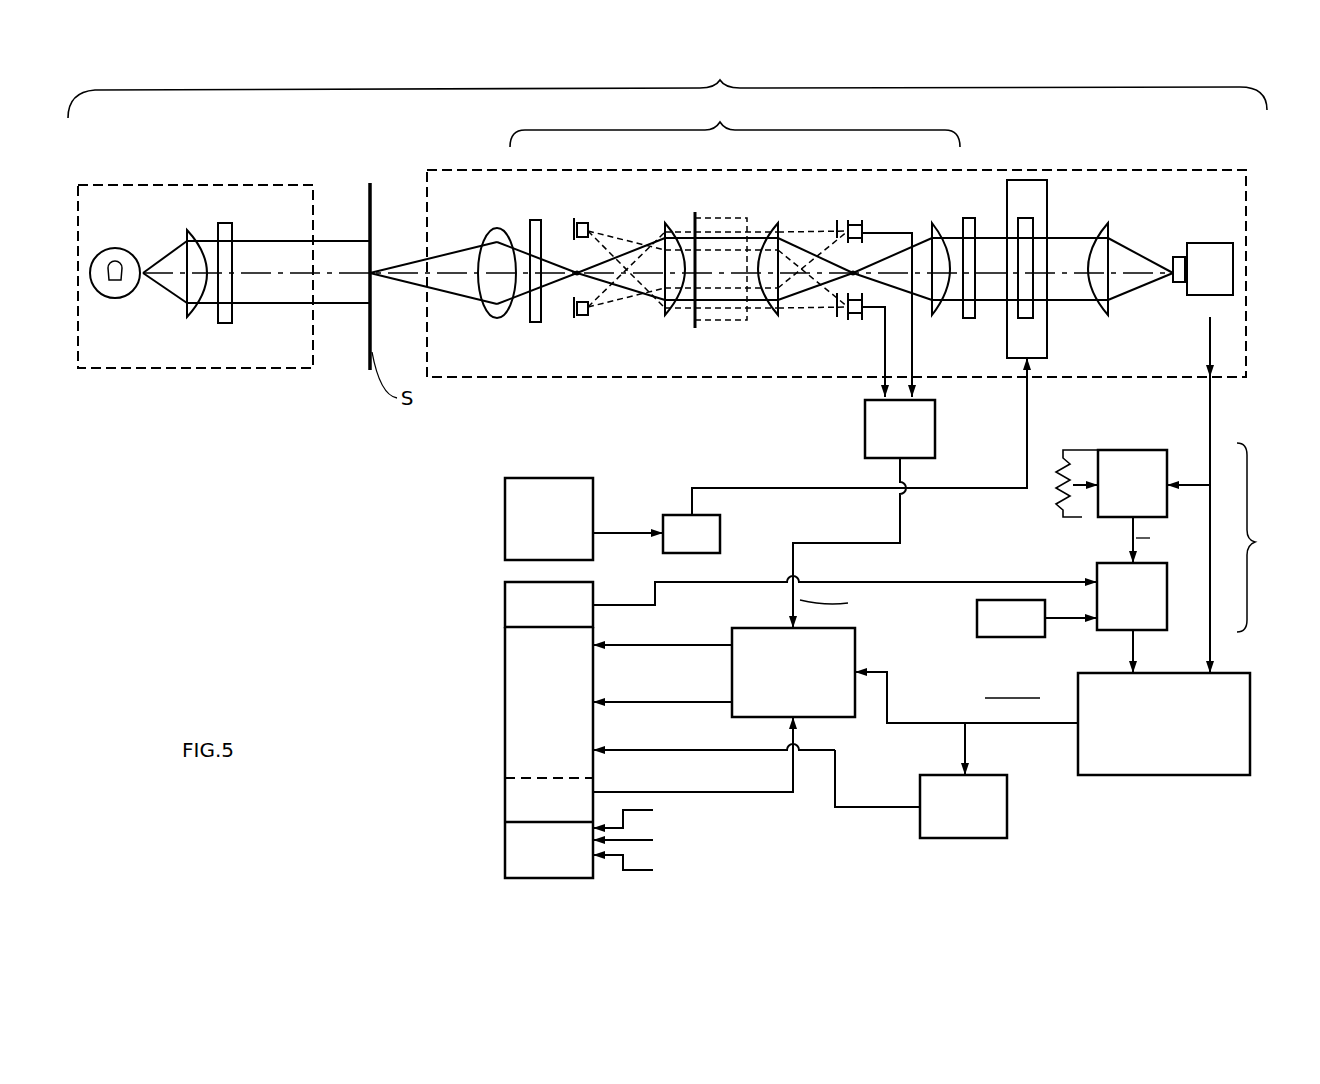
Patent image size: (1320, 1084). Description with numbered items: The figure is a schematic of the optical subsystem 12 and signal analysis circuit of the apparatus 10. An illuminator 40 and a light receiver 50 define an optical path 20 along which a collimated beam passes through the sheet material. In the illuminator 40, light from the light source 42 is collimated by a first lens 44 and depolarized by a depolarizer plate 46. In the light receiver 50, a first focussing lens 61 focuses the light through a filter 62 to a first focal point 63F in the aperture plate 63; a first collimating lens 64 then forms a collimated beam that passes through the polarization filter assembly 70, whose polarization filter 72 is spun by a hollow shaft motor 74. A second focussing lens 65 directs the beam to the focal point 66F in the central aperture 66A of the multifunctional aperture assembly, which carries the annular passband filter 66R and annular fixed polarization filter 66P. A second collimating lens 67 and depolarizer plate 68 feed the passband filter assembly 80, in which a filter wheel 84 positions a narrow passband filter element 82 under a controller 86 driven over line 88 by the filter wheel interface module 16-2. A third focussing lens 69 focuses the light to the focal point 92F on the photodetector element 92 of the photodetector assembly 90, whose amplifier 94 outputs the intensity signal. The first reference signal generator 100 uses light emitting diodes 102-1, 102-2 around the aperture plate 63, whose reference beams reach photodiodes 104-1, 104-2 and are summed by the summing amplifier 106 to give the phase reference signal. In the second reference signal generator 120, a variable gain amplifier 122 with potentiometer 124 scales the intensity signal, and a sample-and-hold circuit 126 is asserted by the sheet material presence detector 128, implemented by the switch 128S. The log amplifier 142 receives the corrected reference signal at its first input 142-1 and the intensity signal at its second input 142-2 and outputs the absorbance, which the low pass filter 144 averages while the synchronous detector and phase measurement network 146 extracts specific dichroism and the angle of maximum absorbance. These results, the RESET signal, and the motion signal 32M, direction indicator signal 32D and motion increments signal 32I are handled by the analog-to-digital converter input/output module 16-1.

The apparatus 10 is at (1035, 73).
The optical subsystem 12 is at (667, 85).
The optical path 20 is at (333, 272).
The illuminator 40 is at (143, 185).
The light source 42 is at (123, 298).
The first lens 44 is at (186, 316).
The depolarizer plate 46 is at (225, 223).
The light receiver 50 is at (1188, 168).
The first focussing lens 61 is at (493, 318).
The filter 62 is at (535, 322).
The aperture plate 63 is at (567, 292).
The first focal point 63F is at (572, 240).
The first collimating lens 64 is at (676, 318).
The second focussing lens 65 is at (785, 222).
The annular passband filter 66R is at (836, 226).
The annular fixed polarization filter 66P is at (848, 220).
The focal point 66F is at (862, 243).
The central aperture 66A is at (815, 303).
The second collimating lens 67 is at (936, 318).
The depolarizer plate 68 is at (971, 320).
The third focussing lens 69 is at (1112, 222).
The polarization filter assembly 70 is at (723, 340).
The polarization filter 72 is at (695, 212).
The hollow shaft motor 74 is at (742, 218).
The passband filter assembly 80 is at (1040, 140).
The narrow passband filter element 82 is at (1026, 218).
The filter wheel 84 is at (1047, 350).
The controller 86 is at (691, 534).
The line 88 is at (1027, 420).
The photodetector assembly 90 is at (1237, 233).
The photodetector element 92 is at (1178, 257).
The focal point 92F is at (1176, 283).
The amplifier 94 is at (1233, 285).
The first reference signal generator 100 is at (735, 123).
The light emitting diode 102-1 is at (582, 222).
The light emitting diode 102-2 is at (587, 301).
The photodiode 104-1 is at (861, 220).
The photodiode 104-2 is at (860, 320).
The summing amplifier 106 is at (864, 514).
The second reference signal generator 120 is at (1262, 537).
The variable gain amplifier 122 is at (1133, 506).
The potentiometer 124 is at (1062, 504).
The sample-and-hold circuit 126 is at (1132, 596).
The sheet material presence detector 128 is at (801, 601).
The manually activated switch 128S is at (1037, 618).
The log amplifier 142 is at (1052, 723).
The first input 142-1 is at (1127, 671).
The second input 142-2 is at (1213, 672).
The low pass filter 144 is at (963, 806).
The synchronous detector and phase measurement network 146 is at (756, 699).
The analog-to-digital converter input/output module 16-1 is at (549, 752).
The filter wheel interface module 16-2 is at (584, 519).
The motion signal 32M is at (645, 814).
The direction indicator signal 32D is at (645, 841).
The motion increments signal 32I is at (642, 869).